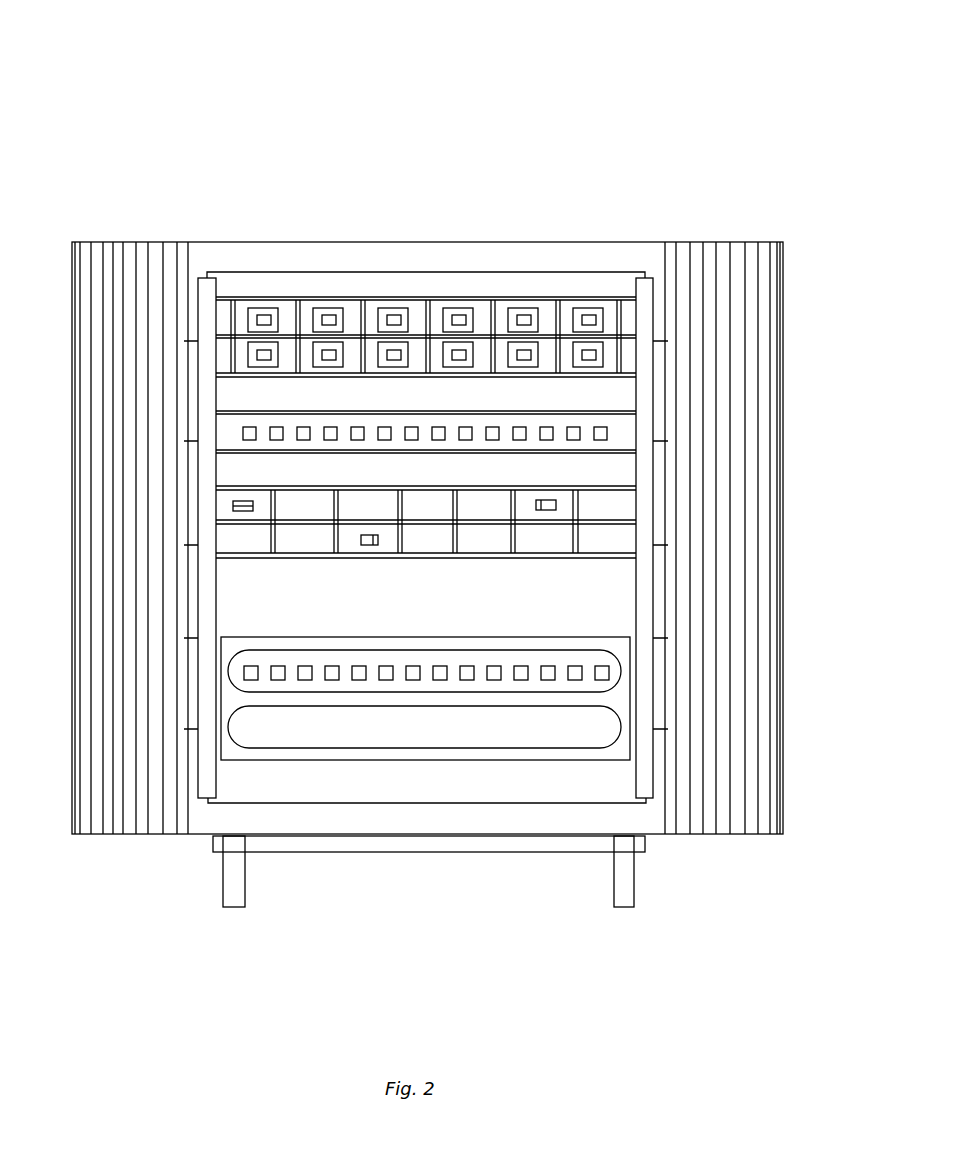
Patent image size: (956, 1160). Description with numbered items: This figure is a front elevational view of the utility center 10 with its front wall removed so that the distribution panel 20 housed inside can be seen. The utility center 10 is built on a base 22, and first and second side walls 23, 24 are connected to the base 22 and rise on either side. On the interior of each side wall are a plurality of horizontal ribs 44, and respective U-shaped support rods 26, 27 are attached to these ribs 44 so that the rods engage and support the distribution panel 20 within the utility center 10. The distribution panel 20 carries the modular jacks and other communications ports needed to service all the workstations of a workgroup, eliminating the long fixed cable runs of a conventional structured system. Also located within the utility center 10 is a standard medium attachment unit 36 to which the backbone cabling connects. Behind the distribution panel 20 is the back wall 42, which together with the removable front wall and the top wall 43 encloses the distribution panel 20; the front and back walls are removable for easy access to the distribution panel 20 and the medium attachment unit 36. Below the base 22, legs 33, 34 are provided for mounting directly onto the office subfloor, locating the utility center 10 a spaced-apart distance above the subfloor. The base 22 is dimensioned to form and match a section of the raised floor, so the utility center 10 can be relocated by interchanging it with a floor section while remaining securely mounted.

The utility center 10 is at (146, 149).
The distribution panel 20 is at (548, 297).
The base 22 is at (486, 852).
The first side wall 23 is at (783, 283).
The second side wall 24 is at (73, 433).
The U-shaped support rod 26 is at (647, 278).
The U-shaped support rod 27 is at (230, 280).
The leg 33 is at (237, 892).
The leg 34 is at (623, 895).
The medium attachment unit 36 is at (555, 637).
The back wall 42 is at (418, 601).
The top wall 43 is at (401, 262).
The horizontal ribs 44 is at (658, 440).